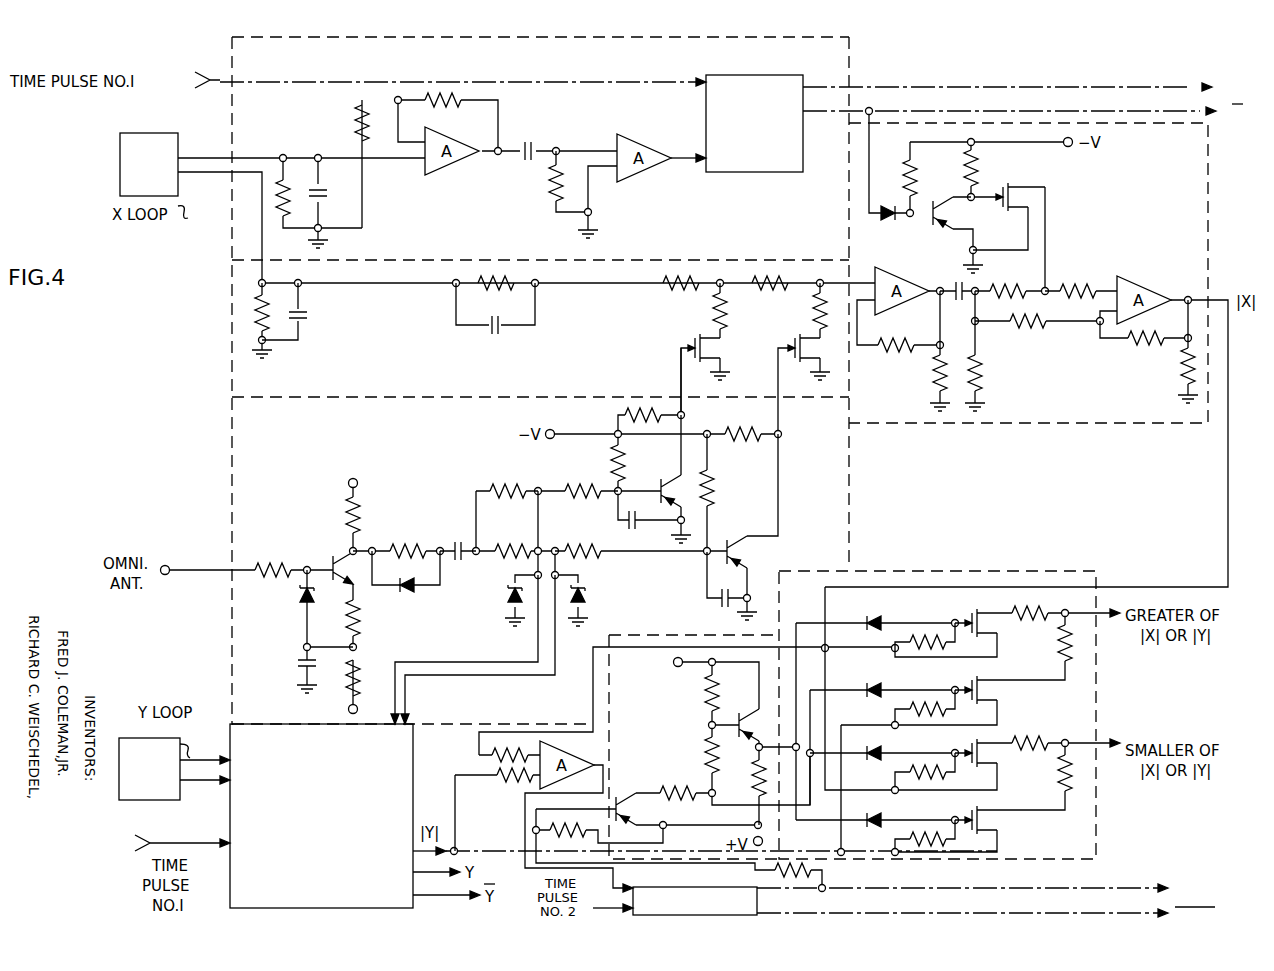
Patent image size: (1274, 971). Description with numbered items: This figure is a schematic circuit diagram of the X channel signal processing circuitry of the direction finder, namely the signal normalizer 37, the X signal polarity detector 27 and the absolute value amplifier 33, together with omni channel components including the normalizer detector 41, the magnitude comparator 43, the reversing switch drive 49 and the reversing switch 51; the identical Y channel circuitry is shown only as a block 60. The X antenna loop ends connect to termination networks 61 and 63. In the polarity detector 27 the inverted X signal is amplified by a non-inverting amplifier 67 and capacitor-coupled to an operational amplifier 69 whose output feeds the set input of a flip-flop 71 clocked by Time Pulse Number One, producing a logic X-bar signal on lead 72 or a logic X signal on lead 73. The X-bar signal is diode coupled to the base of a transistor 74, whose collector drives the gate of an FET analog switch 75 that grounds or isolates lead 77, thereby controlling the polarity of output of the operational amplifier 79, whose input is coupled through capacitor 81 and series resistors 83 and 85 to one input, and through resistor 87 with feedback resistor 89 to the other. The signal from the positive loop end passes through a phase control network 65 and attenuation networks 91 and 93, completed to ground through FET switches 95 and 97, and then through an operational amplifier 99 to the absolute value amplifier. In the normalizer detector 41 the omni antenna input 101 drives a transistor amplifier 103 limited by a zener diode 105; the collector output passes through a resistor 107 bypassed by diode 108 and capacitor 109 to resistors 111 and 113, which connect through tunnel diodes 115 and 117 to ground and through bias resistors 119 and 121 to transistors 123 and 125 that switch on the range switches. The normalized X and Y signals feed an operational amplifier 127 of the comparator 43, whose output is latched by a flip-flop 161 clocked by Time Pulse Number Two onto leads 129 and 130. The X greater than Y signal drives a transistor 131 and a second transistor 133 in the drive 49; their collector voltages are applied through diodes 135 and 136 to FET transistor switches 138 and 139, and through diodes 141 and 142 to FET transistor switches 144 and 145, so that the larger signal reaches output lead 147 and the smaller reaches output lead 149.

The X signal polarity detector 27 is at (232, 244).
The absolute value amplifier 33 is at (1208, 168).
The signal normalizer 37 is at (232, 326).
The normalizer detector 41 is at (232, 474).
The magnitude comparator 43 is at (510, 724).
The reversing switch drive 49 is at (685, 634).
The reversing switch 51 is at (1055, 570).
The Y channel processor 60 is at (228, 824).
The termination network 61 is at (280, 226).
The termination network 63 is at (318, 326).
The phase control network 65 is at (448, 294).
The non-inverting amplifier 67 is at (465, 166).
The operational amplifier 69 is at (665, 172).
The flip-flop 71 is at (770, 176).
The lead 72 is at (994, 112).
The lead 73 is at (1062, 88).
The transistor 74 is at (940, 204).
The FET analog switch 75 is at (1018, 182).
The lead 77 is at (1045, 233).
The operational amplifier 79 is at (1134, 286).
The capacitor 81 is at (958, 272).
The resistor 83 is at (1000, 288).
The resistor 85 is at (1070, 283).
The resistor 87 is at (1027, 332).
The resistor 89 is at (1144, 356).
The attenuation network 91 is at (702, 293).
The attenuation network 93 is at (796, 293).
The FET switch 95 is at (696, 337).
The FET switch 97 is at (818, 344).
The operational amplifier 99 is at (885, 276).
The omni antenna input 101 is at (209, 568).
The transistor amplifier 103 is at (333, 548).
The zener diode 105 is at (300, 614).
The resistor 107 is at (407, 548).
The diode 108 is at (410, 592).
The capacitor 109 is at (457, 548).
The resistor 111 is at (510, 488).
The resistor 113 is at (521, 548).
The tunnel diode 115 is at (506, 598).
The tunnel diode 117 is at (580, 584).
The resistor 119 is at (582, 488).
The resistor 121 is at (586, 548).
The transistor 123 is at (664, 478).
The transistor 125 is at (753, 557).
The operational amplifier 127 is at (553, 752).
The lead 129 is at (1014, 888).
The lead 130 is at (1039, 912).
The transistor 131 is at (625, 795).
The transistor 133 is at (743, 704).
The diode 135 is at (868, 678).
The diode 136 is at (876, 744).
The FET transistor switch 138 is at (996, 695).
The FET transistor switch 139 is at (996, 763).
The diode 141 is at (867, 618).
The diode 142 is at (878, 814).
The FET transistor switch 144 is at (976, 612).
The FET transistor switch 145 is at (998, 831).
The output lead 147 is at (1088, 614).
The output lead 149 is at (1086, 746).
The flip-flop 161 is at (757, 900).